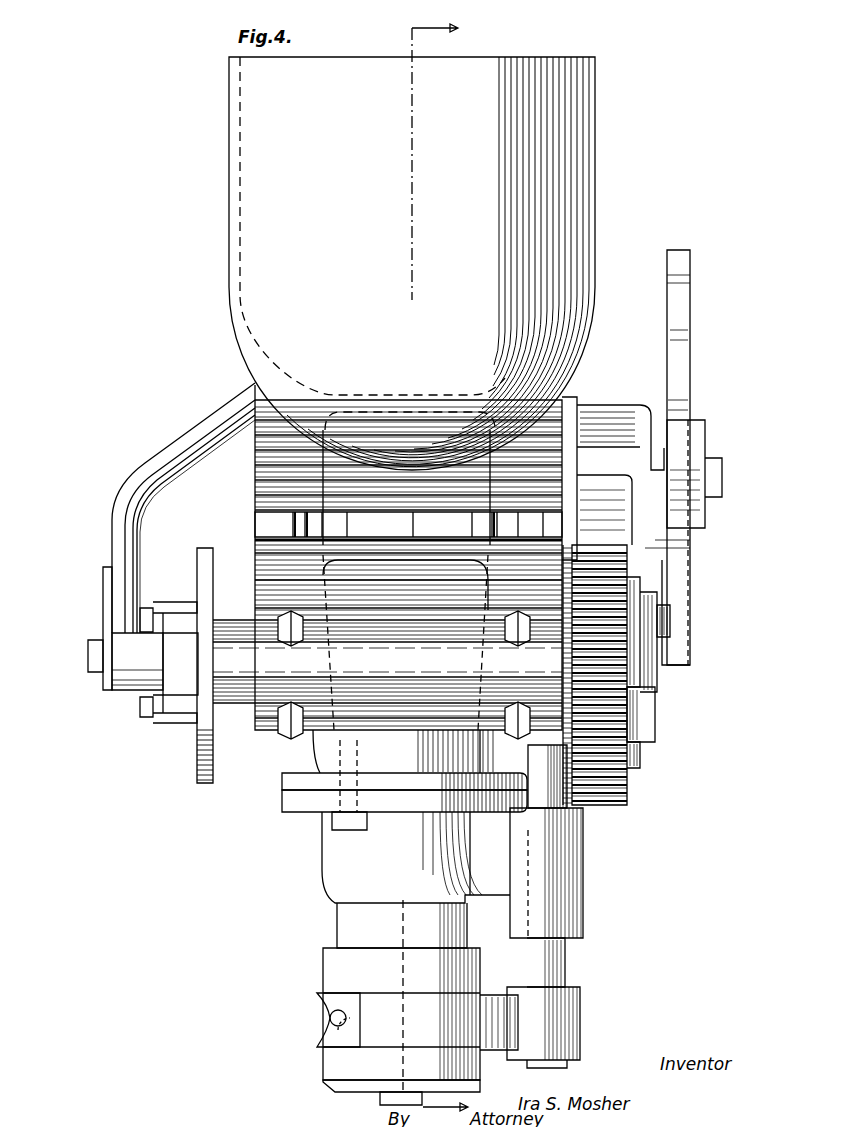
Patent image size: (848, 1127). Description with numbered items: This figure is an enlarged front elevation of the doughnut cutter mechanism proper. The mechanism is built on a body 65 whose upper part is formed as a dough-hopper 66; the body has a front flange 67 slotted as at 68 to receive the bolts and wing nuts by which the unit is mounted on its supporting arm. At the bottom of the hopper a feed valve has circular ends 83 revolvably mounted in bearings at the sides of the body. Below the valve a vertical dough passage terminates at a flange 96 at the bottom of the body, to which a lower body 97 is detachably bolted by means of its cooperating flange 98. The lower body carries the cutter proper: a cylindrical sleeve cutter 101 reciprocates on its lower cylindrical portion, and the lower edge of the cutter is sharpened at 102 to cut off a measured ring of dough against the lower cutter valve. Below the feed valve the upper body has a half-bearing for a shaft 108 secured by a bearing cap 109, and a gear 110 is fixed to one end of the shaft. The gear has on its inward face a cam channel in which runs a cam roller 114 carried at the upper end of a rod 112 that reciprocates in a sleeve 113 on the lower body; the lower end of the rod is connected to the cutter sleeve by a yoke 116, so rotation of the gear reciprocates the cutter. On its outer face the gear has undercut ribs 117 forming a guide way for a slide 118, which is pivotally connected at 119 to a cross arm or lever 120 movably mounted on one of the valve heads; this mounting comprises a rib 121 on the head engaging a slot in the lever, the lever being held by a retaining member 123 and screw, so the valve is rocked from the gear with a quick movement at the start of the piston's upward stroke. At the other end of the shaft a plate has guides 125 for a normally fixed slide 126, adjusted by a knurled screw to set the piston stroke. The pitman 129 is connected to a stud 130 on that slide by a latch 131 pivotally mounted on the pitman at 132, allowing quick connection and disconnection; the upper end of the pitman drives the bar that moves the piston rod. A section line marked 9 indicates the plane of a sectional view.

The section line 9 is at (450, 565).
The body 65 is at (226, 342).
The dough-hopper 66 is at (372, 243).
The front flange 67 is at (330, 522).
The slot 68 is at (268, 527).
The circular end 83 is at (577, 397).
The flange 96 is at (290, 775).
The lower body 97 is at (310, 869).
The flange 98 is at (290, 798).
The cutter 101 is at (325, 965).
The sharpened lower edge 102 is at (333, 1087).
The shaft 108 is at (233, 629).
The bearing cap 109 is at (387, 659).
The gear 110 is at (618, 778).
The rod 112 is at (548, 958).
The sleeve 113 is at (583, 920).
The cam roller 114 is at (560, 768).
The yoke 116 is at (350, 1040).
The undercut ribs 117 is at (632, 675).
The slide 118 is at (648, 722).
The pivot connection 119 is at (672, 618).
The cross arm or lever 120 is at (690, 265).
The rib 121 is at (690, 540).
The retaining member 123 is at (705, 440).
The guides 125 is at (185, 606).
The slide 126 is at (172, 655).
The pitman 129 is at (135, 487).
The stud 130 is at (95, 675).
The latch 131 is at (90, 660).
The pivot 132 is at (103, 582).